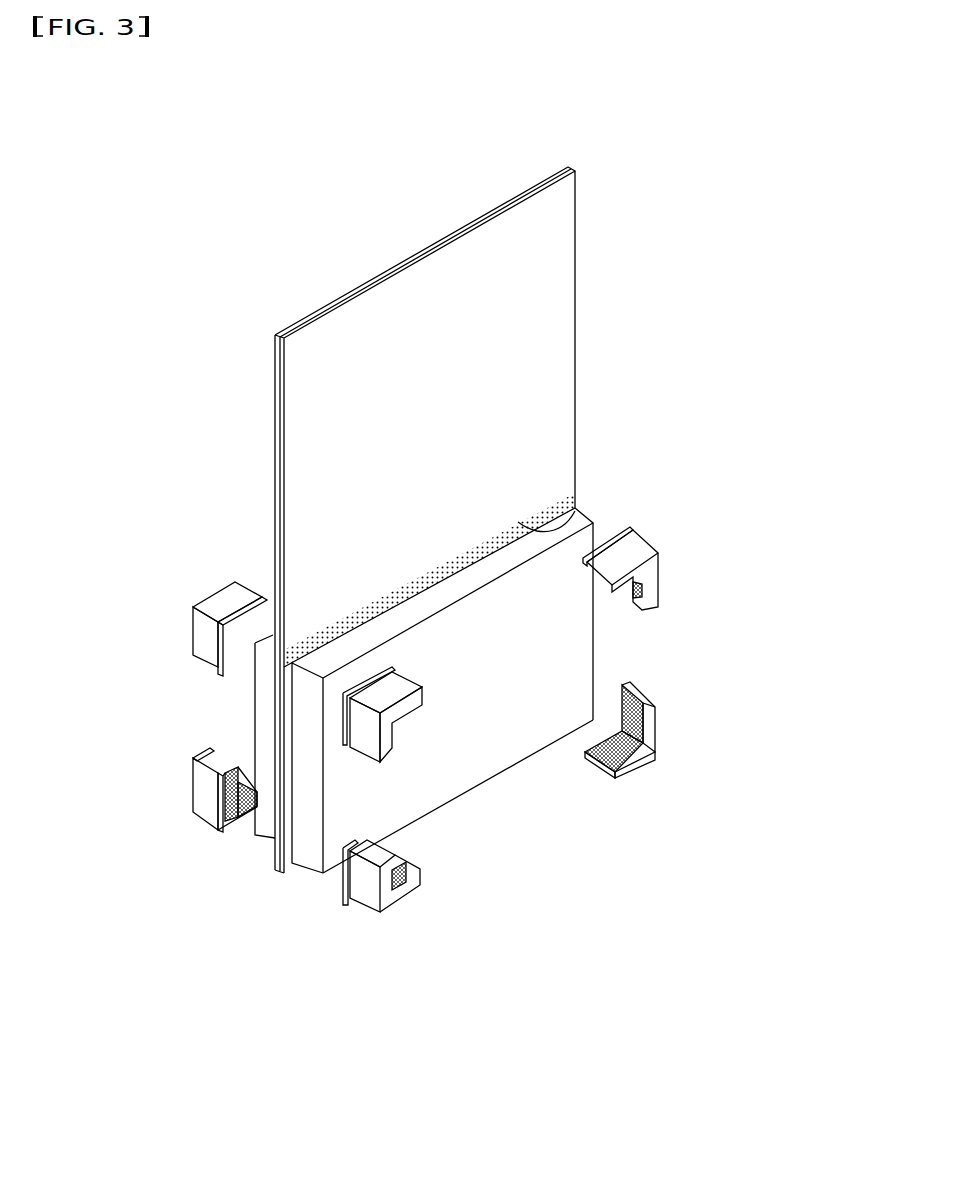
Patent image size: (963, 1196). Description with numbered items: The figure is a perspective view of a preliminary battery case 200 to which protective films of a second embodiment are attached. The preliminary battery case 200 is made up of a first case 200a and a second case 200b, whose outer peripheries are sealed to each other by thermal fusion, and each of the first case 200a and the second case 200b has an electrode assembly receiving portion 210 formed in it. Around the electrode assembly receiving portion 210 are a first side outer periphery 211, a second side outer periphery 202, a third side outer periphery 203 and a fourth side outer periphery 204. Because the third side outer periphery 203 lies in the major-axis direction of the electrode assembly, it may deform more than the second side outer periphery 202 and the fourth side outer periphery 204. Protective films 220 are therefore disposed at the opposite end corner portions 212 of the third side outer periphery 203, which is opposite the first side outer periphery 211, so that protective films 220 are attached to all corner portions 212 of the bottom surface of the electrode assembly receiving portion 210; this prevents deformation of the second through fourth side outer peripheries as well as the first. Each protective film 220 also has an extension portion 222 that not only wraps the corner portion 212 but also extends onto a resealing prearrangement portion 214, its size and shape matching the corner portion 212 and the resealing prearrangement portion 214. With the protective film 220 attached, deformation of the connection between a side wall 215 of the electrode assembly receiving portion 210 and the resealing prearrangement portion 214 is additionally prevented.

The preliminary battery case 200 is at (520, 490).
The first case 200a is at (512, 197).
The second case 200b is at (476, 520).
The second side outer periphery 202 is at (277, 836).
The third side outer periphery 203 is at (460, 824).
The fourth side outer periphery 204 is at (612, 627).
The electrode assembly receiving portion 210 is at (434, 755).
The first side outer periphery 211 is at (575, 511).
The corner portion 212 is at (323, 677).
The resealing prearrangement portion 214 is at (518, 522).
The side wall 215 is at (497, 573).
The protective film 220 is at (437, 760).
The extension portion 222 is at (656, 547).